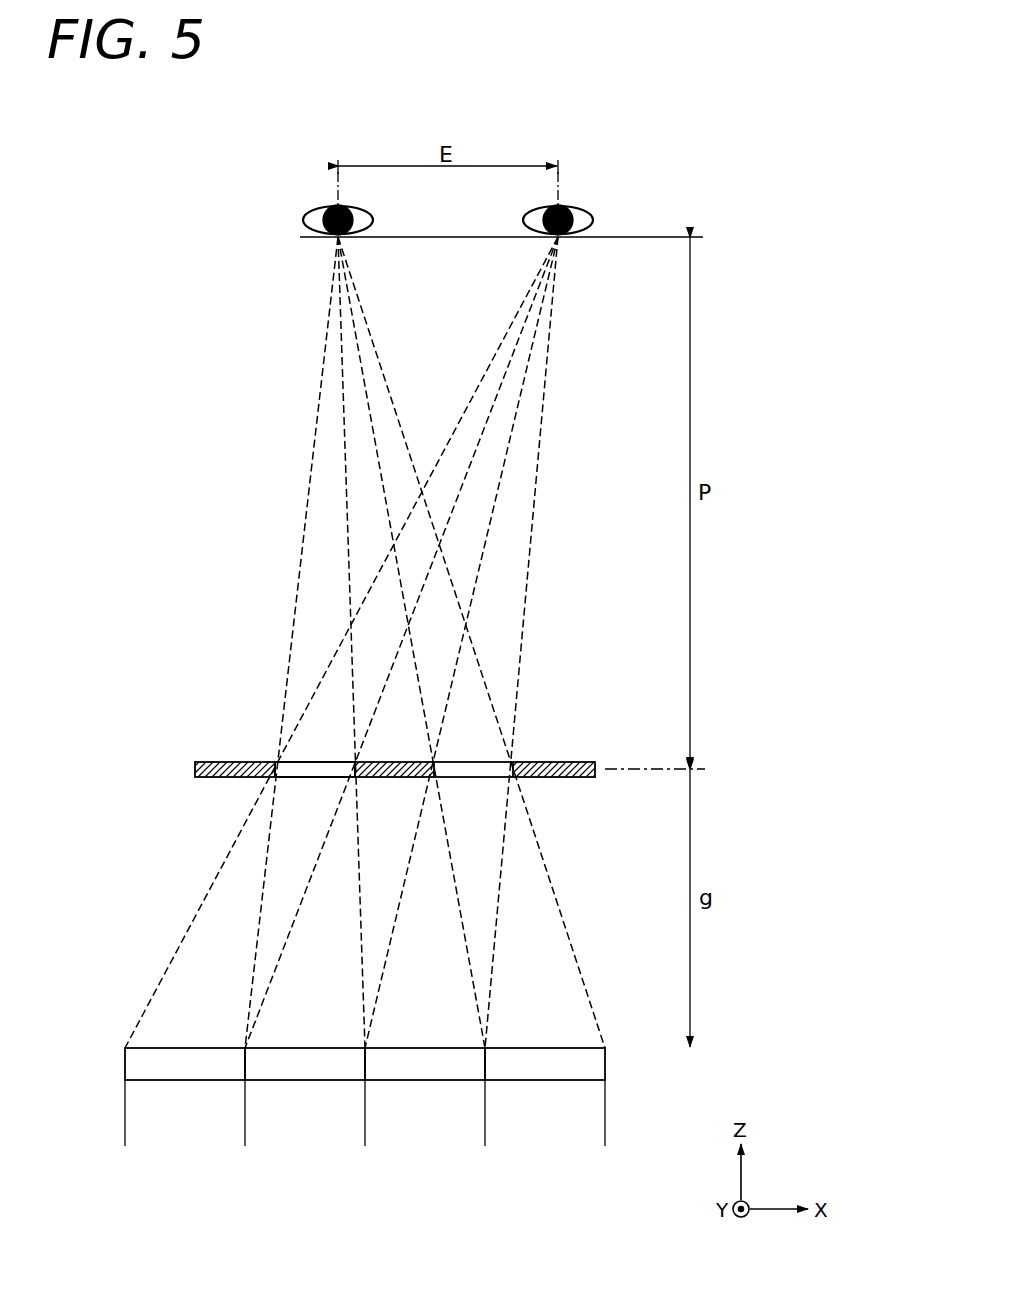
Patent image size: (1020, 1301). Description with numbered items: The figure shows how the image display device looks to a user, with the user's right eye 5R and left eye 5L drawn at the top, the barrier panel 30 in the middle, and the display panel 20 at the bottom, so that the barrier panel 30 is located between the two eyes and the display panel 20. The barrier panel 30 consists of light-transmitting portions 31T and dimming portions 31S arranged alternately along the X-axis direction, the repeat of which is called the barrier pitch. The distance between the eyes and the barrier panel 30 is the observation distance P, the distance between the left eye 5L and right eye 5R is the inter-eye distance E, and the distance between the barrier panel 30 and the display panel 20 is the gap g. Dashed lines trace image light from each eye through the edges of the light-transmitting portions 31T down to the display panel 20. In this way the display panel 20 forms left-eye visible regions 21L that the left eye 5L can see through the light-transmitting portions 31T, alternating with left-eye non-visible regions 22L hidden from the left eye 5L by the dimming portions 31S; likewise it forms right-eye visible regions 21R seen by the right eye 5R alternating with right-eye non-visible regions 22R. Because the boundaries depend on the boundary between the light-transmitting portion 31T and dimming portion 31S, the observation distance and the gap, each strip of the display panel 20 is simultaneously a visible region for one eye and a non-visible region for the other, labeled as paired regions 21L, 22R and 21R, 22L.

The right eye 5R is at (323, 204).
The left eye 5L is at (575, 204).
The barrier panel 30 is at (356, 793).
The light-transmitting portion 31T is at (310, 772).
The dimming portion 31S is at (389, 778).
The display panel 20 is at (327, 1109).
The left-eye visible region 21L is at (305, 1109).
The right-eye non-visible region 22R is at (244, 1137).
The right-eye visible region 21R is at (425, 1109).
The left-eye non-visible region 22L is at (364, 1137).